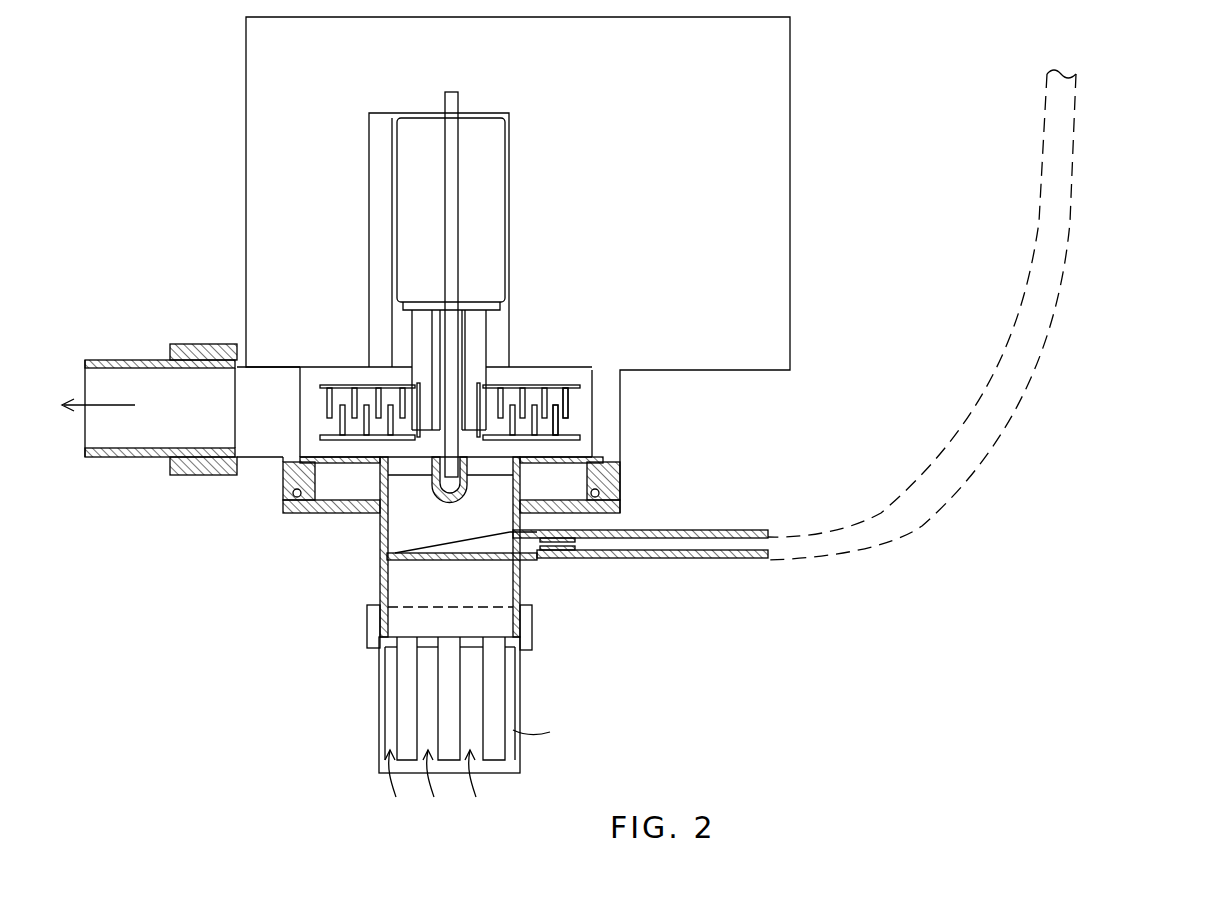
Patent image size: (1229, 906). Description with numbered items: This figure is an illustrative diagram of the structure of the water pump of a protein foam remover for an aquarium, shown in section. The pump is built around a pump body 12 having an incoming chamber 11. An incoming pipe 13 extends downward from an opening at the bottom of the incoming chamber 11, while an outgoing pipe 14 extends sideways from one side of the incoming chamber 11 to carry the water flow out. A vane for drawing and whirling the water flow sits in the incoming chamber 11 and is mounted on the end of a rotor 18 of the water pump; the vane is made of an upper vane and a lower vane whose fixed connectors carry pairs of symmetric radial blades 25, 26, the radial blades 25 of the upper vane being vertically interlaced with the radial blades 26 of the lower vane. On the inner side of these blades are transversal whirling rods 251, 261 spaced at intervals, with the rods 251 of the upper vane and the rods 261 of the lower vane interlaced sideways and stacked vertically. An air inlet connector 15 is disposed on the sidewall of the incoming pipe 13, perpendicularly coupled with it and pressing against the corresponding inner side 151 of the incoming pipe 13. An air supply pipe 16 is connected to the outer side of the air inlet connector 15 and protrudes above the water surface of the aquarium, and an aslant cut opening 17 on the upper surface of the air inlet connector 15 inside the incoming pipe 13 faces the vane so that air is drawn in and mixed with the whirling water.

The incoming chamber 11 is at (310, 376).
The pump body 12 is at (772, 143).
The incoming pipe 13 is at (522, 592).
The outgoing pipe 14 is at (127, 443).
The air inlet connector 15 is at (530, 560).
The inner side 151 is at (378, 578).
The air supply pipe 16 is at (1062, 135).
The aslant cut opening 17 is at (378, 543).
The rotor 18 is at (410, 237).
The radial blade 25 is at (578, 388).
The transversal whirling rod 251 is at (570, 408).
The radial blade 26 is at (577, 440).
The transversal whirling rod 261 is at (563, 427).